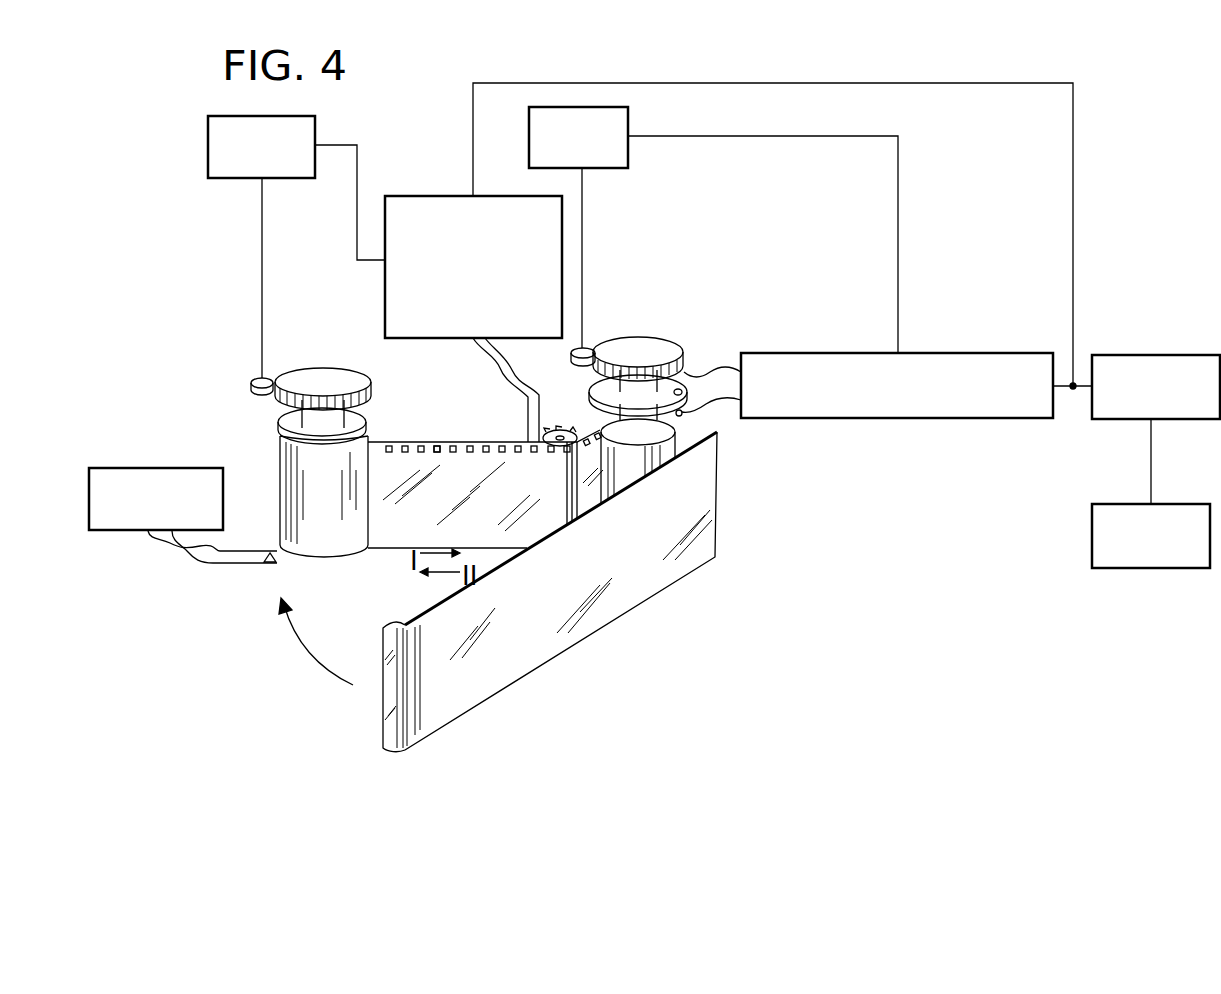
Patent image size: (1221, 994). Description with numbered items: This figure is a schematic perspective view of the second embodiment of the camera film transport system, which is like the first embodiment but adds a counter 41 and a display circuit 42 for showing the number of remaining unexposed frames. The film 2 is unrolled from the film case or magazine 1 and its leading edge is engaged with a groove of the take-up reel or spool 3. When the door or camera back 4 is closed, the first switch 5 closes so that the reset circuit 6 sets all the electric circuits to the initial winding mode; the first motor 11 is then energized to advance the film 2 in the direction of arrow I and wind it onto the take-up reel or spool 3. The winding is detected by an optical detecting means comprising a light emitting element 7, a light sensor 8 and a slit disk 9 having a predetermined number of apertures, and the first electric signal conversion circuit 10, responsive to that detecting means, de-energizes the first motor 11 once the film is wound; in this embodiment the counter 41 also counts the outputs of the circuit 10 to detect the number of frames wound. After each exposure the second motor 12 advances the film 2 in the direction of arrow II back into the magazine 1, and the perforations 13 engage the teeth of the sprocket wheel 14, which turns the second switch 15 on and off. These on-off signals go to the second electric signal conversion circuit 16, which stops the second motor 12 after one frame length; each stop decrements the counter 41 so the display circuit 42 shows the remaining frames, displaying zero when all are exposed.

The film case or magazine 1 is at (333, 552).
The film 2 is at (388, 548).
The take-up reel or spool 3 is at (620, 448).
The door or camera back 4 is at (630, 613).
The first switch 5 is at (243, 563).
The reset circuit 6 is at (160, 468).
The light emitting element 7 is at (697, 372).
The light sensor 8 is at (703, 416).
The slit disk 9 is at (592, 380).
The first electric signal conversion circuit 10 is at (840, 418).
The first motor 11 is at (628, 155).
The second motor 12 is at (208, 147).
The perforations 13 is at (437, 445).
The sprocket wheel 14 is at (548, 436).
The second switch 15 is at (526, 430).
The second electric signal conversion circuit 16 is at (420, 196).
The counter 41 is at (1152, 355).
The display circuit 42 is at (1092, 538).